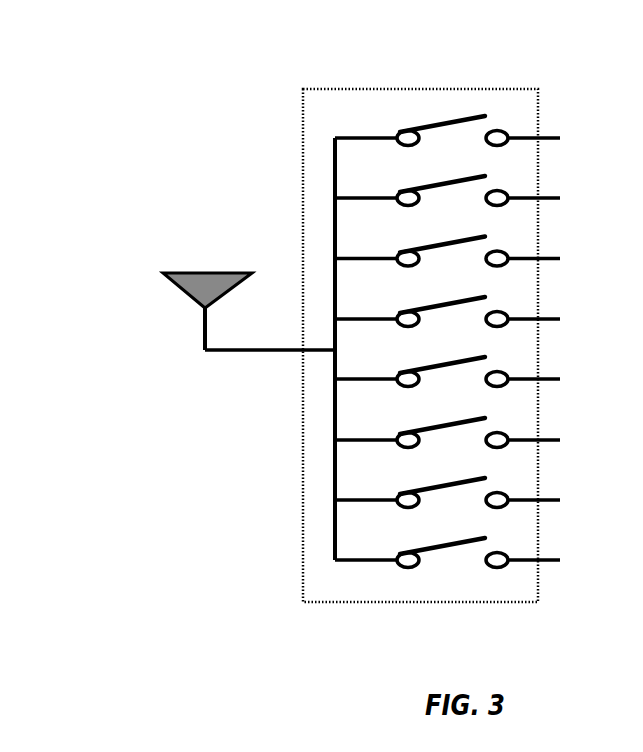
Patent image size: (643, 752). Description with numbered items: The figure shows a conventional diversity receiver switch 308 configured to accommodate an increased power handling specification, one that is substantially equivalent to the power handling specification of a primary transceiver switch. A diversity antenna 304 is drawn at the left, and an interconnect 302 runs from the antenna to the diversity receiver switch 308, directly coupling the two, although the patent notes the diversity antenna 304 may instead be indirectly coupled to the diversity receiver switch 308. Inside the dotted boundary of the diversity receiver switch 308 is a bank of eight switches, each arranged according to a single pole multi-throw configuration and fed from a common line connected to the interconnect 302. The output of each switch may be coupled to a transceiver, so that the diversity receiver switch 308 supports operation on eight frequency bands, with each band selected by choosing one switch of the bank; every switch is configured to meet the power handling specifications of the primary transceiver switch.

The interconnect 302 is at (235, 354).
The diversity antenna 304 is at (163, 277).
The diversity receiver switch 308 is at (408, 89).